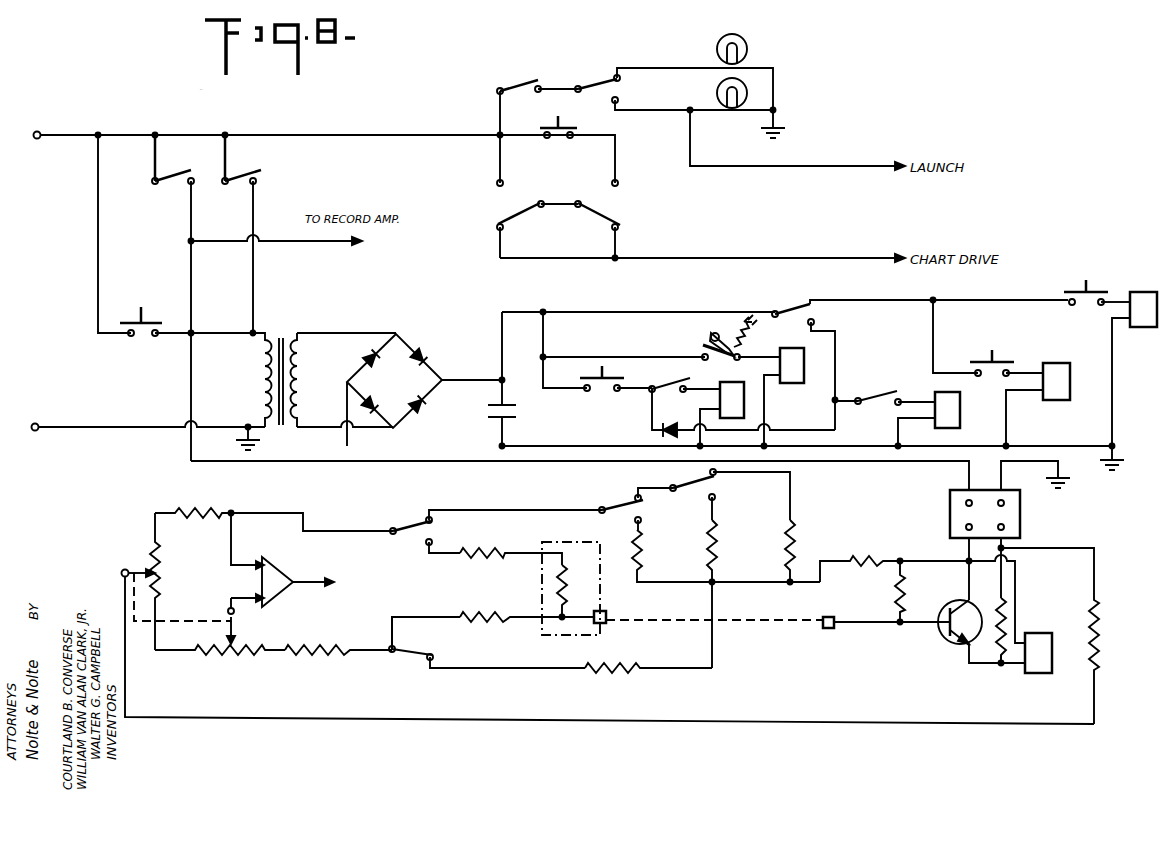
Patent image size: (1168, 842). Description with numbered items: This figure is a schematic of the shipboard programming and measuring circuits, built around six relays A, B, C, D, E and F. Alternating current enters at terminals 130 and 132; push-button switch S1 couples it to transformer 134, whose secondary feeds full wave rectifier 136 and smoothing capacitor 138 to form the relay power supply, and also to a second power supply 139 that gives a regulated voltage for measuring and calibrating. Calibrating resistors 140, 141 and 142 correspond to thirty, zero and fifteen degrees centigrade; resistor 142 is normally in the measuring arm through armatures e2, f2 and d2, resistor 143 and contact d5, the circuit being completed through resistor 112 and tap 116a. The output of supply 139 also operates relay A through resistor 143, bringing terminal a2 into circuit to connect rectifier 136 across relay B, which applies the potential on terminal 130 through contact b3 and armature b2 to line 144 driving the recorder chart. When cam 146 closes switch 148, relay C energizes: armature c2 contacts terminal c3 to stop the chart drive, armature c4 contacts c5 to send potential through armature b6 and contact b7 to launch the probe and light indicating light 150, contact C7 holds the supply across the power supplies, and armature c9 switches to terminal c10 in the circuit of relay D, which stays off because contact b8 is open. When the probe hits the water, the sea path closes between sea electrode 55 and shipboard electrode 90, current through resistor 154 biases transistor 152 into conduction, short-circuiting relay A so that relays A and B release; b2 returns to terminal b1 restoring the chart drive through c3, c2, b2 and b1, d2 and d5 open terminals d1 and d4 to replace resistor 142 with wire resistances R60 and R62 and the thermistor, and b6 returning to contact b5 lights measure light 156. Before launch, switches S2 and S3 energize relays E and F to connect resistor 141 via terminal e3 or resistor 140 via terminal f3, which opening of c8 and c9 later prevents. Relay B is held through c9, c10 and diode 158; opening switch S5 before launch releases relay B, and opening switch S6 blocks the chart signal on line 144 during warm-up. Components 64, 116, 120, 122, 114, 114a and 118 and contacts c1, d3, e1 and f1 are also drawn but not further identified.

The terminal 130 is at (39, 131).
The switch 64 is at (172, 184).
The relay contact C7 is at (252, 170).
The terminal 132 is at (42, 419).
The push-button switch S1 is at (137, 336).
The transformer 134 is at (286, 332).
The full wave rectifier 136 is at (424, 390).
The smoothing capacitor 138 is at (486, 410).
The switch S5 is at (596, 391).
The relay terminal a2 is at (650, 392).
The diode 158 is at (671, 424).
The cam 146 is at (710, 330).
The switch 148 is at (716, 359).
The relay armature c4 is at (504, 86).
The relay terminal c3 is at (480, 141).
The relay contact c5 is at (540, 84).
The relay armature b6 is at (580, 84).
The relay contact b5 is at (615, 65).
The relay contact b7 is at (622, 100).
The measure indicating light 156 is at (743, 25).
The indicating light 150 is at (732, 112).
The switch S6 is at (555, 139).
The relay contact b3 is at (620, 184).
The relay contact c1 is at (495, 231).
The relay armature c2 is at (510, 210).
The relay armature b2 is at (587, 212).
The relay terminal b1 is at (623, 230).
The line 144 is at (785, 247).
The relay contact c8 is at (810, 301).
The relay armature c9 is at (779, 324).
The relay terminal c10 is at (816, 323).
The relay contact b8 is at (874, 398).
The switch S2 is at (988, 376).
The switch S3 is at (1084, 304).
The relay B is at (721, 415).
The relay C is at (771, 398).
The relay D is at (928, 420).
The relay E is at (1037, 406).
The relay F is at (1134, 369).
The relay A is at (1026, 605).
The tap 116a is at (130, 567).
The potentiometer 116 is at (164, 576).
The resistor 120 is at (210, 497).
The amplifier 122 is at (280, 574).
The potentiometer wiper 114a is at (238, 633).
The potentiometer 114 is at (210, 658).
The resistor 118 is at (304, 659).
The relay armature d2 is at (394, 521).
The relay terminal d1 is at (423, 512).
The relay contact d3 is at (436, 540).
The wire resistance R62 is at (476, 558).
The relay contact d5 is at (395, 656).
The relay terminal d4 is at (430, 664).
The wire resistance R60 is at (478, 620).
The sea electrode 55 is at (604, 623).
The relay armature f2 is at (606, 506).
The relay contact f1 is at (635, 494).
The relay armature e2 is at (690, 493).
The relay contact e1 is at (710, 472).
The relay terminal e3 is at (715, 497).
The relay terminal f3 is at (626, 521).
The calibrating resistor 140 is at (644, 550).
The calibrating resistor 141 is at (718, 548).
The calibrating resistor 142 is at (793, 536).
The resistor 143 is at (608, 672).
The resistor 154 is at (894, 594).
The shipboard electrode 90 is at (828, 630).
The transistor 152 is at (954, 641).
The power supply 139 is at (1020, 518).
The resistor 112 is at (1088, 662).